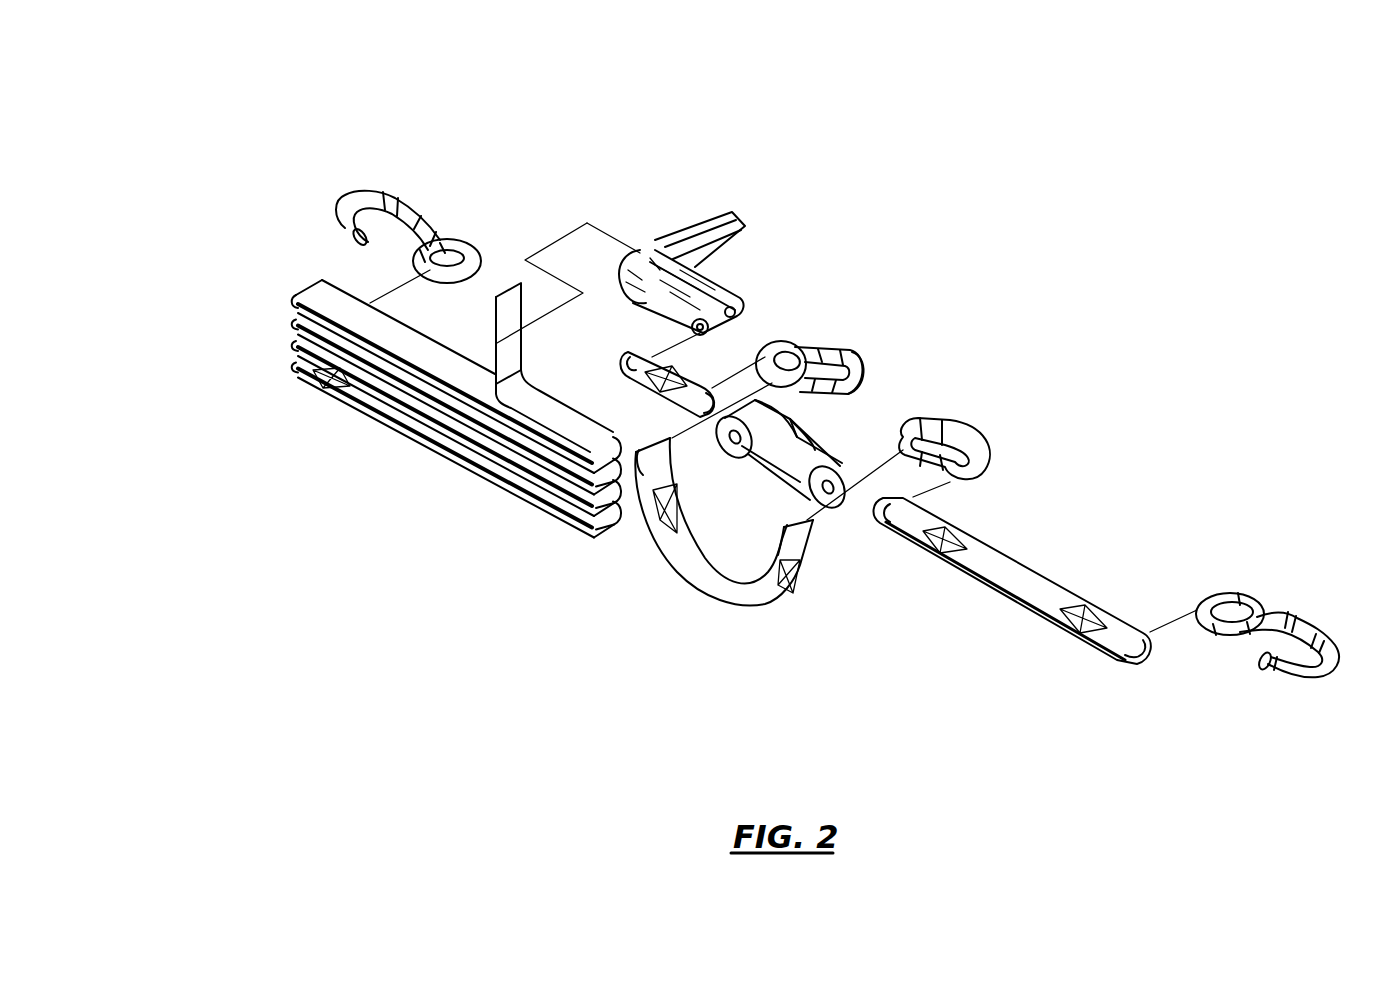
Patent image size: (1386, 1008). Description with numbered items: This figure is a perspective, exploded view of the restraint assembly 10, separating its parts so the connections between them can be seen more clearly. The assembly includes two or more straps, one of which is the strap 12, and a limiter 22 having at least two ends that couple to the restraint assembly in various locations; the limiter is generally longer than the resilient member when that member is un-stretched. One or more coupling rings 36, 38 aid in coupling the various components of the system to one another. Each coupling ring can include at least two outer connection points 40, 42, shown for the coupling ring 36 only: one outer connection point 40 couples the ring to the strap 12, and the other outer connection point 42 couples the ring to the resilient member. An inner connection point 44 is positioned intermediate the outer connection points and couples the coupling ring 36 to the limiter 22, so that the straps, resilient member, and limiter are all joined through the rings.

The restraint assembly 10 is at (250, 143).
The strap 12 is at (503, 290).
The limiter 22 is at (690, 590).
The coupling ring 36 is at (837, 397).
The coupling ring 38 is at (968, 420).
The outer connection point 40 is at (787, 334).
The outer connection point 42 is at (838, 376).
The inner connection point 44 is at (815, 354).